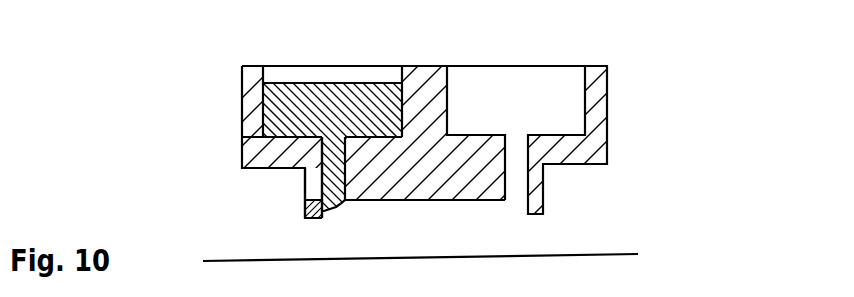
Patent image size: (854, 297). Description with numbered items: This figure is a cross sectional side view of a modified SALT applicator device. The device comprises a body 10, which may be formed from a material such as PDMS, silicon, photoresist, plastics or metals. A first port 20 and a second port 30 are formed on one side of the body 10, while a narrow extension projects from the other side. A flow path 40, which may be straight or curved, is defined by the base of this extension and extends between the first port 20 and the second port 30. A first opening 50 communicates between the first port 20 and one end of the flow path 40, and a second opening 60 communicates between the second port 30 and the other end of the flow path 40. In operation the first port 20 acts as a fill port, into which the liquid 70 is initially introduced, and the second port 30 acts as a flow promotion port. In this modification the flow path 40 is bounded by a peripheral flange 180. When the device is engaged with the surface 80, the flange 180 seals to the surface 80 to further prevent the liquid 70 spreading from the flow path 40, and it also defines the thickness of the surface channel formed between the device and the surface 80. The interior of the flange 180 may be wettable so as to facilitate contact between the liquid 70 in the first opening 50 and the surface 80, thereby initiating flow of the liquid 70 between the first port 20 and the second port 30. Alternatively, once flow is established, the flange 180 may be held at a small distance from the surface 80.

The body 10 is at (425, 70).
The first port 20 is at (327, 71).
The second port 30 is at (527, 71).
The flow path 40 is at (420, 202).
The first opening 50 is at (303, 182).
The second opening 60 is at (518, 182).
The liquid 70 is at (274, 113).
The surface 80 is at (610, 254).
The peripheral flange 180 is at (303, 220).